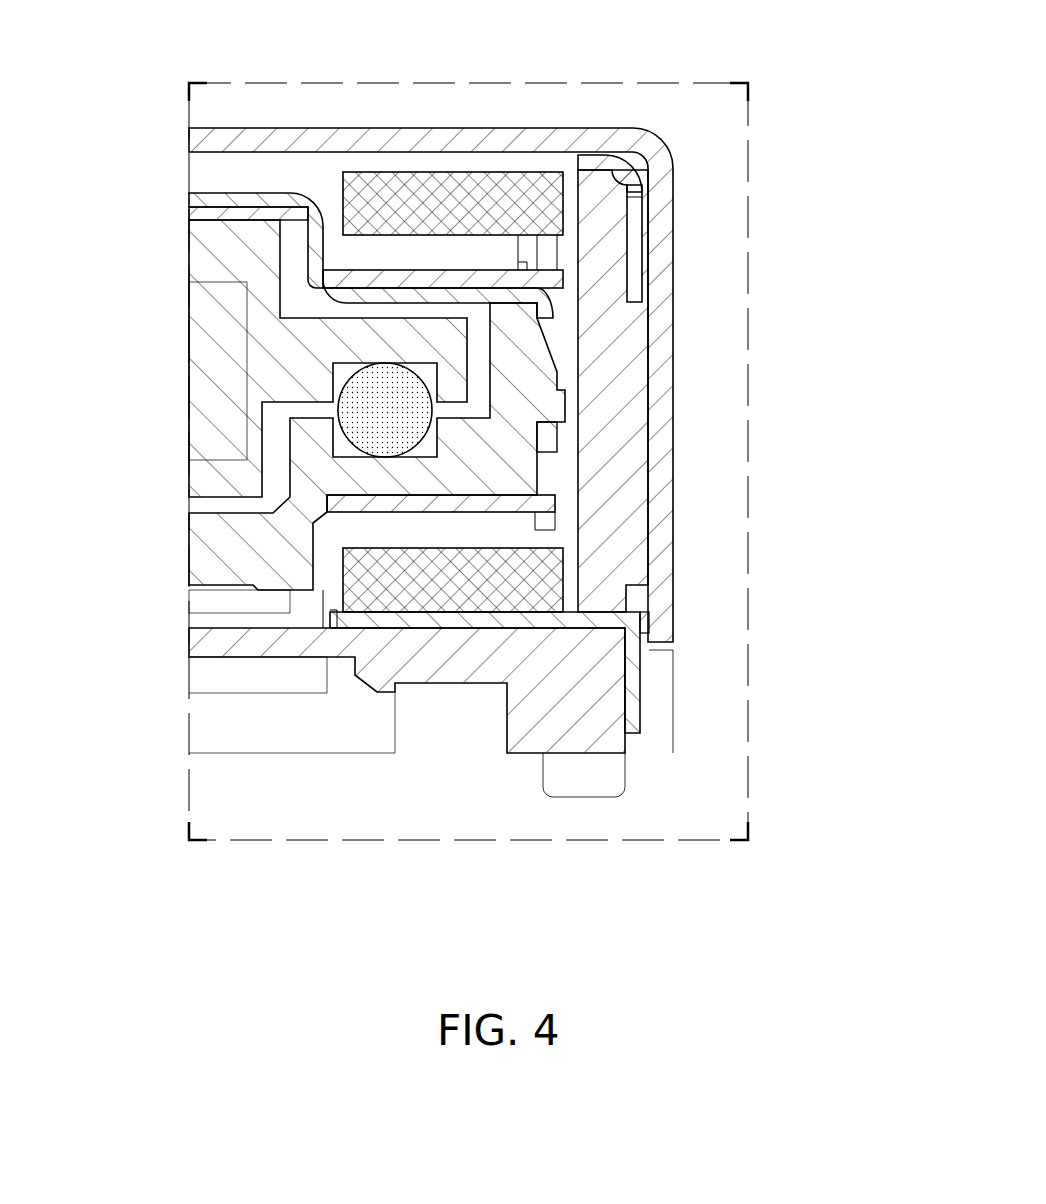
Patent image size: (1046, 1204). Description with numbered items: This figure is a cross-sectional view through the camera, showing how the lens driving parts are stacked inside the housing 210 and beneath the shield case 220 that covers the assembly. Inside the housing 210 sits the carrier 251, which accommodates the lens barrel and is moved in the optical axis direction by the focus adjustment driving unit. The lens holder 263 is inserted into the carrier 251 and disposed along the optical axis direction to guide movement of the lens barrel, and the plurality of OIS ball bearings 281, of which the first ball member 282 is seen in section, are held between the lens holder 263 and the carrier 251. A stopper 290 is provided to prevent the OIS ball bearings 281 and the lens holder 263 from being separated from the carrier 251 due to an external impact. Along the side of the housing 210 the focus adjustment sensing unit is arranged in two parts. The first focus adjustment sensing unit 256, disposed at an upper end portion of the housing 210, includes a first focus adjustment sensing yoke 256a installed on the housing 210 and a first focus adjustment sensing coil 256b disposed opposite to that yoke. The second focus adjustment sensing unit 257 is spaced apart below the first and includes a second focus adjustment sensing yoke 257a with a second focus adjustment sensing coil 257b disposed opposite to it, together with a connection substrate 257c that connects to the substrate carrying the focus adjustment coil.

The housing 210 is at (453, 657).
The shield case 220 is at (518, 140).
The carrier 251 is at (197, 553).
The first focus adjustment sensing unit 256 is at (609, 231).
The first focus adjustment sensing yoke 256a is at (562, 256).
The first focus adjustment sensing coil 256b is at (535, 205).
The second focus adjustment sensing unit 257 is at (637, 444).
The second focus adjustment sensing yoke 257a is at (550, 503).
The second focus adjustment sensing coil 257b is at (547, 587).
The connection substrate 257c is at (571, 625).
The lens holder 263 is at (243, 247).
The OIS ball bearings 281 is at (239, 410).
The first ball member 282 is at (367, 392).
The stopper 290 is at (294, 198).